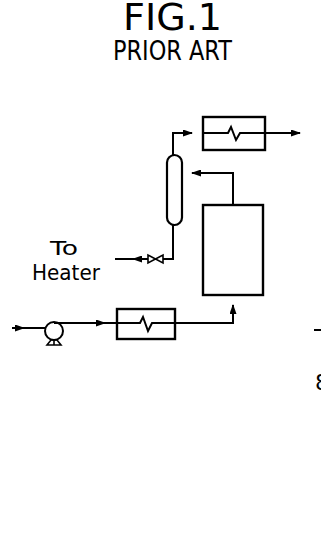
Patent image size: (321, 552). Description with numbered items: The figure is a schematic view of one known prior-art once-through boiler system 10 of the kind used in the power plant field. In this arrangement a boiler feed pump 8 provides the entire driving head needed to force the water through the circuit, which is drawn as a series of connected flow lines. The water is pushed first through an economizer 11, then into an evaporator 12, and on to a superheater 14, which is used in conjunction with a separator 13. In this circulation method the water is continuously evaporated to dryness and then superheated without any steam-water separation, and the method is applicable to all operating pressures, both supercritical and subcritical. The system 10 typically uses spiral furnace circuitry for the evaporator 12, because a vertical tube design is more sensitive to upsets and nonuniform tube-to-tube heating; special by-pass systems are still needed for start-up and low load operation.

The boiler feed pump 8 is at (53, 346).
The system 10 is at (130, 144).
The economizer 11 is at (136, 333).
The evaporator 12 is at (263, 246).
The separator 13 is at (167, 196).
The superheater 14 is at (257, 118).